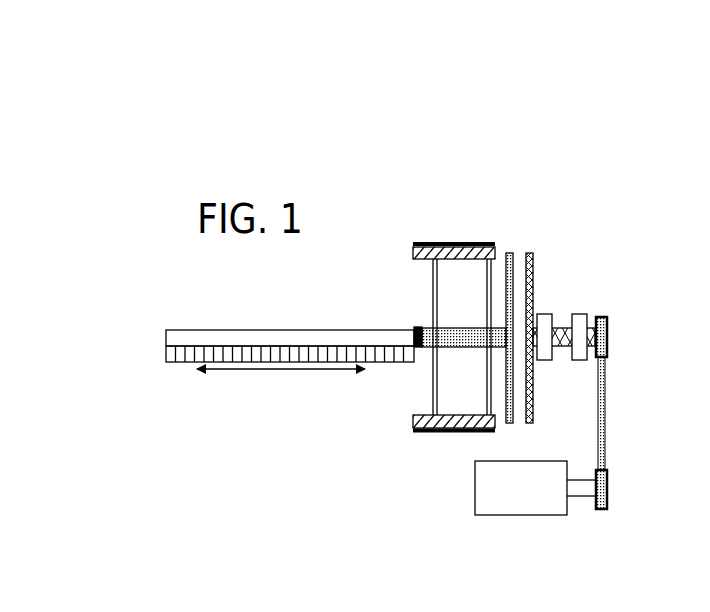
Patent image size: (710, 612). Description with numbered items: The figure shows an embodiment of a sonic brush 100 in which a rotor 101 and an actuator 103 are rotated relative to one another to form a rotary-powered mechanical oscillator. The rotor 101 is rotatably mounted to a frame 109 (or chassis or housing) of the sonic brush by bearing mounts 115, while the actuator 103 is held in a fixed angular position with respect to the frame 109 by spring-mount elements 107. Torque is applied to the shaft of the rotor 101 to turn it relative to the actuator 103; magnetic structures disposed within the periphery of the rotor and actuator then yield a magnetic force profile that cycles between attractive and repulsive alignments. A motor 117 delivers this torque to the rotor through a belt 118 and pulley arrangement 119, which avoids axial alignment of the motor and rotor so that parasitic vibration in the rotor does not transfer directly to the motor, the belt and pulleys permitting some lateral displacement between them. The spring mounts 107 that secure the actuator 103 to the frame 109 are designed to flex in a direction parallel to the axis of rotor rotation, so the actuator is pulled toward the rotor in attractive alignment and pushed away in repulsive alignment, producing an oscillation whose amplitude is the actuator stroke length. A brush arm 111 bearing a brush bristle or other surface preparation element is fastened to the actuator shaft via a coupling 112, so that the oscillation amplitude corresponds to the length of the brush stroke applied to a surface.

The sonic brush 100 is at (296, 473).
The rotor 101 is at (532, 285).
The actuator 103 is at (510, 253).
The spring-mount elements 107 is at (488, 387).
The frame 109 is at (417, 250).
The brush arm 111 is at (323, 333).
The coupling 112 is at (415, 328).
The bearing mounts 115 is at (543, 318).
The motor 117 is at (535, 488).
The belt 118 is at (597, 428).
The pulley arrangement 119 is at (609, 355).